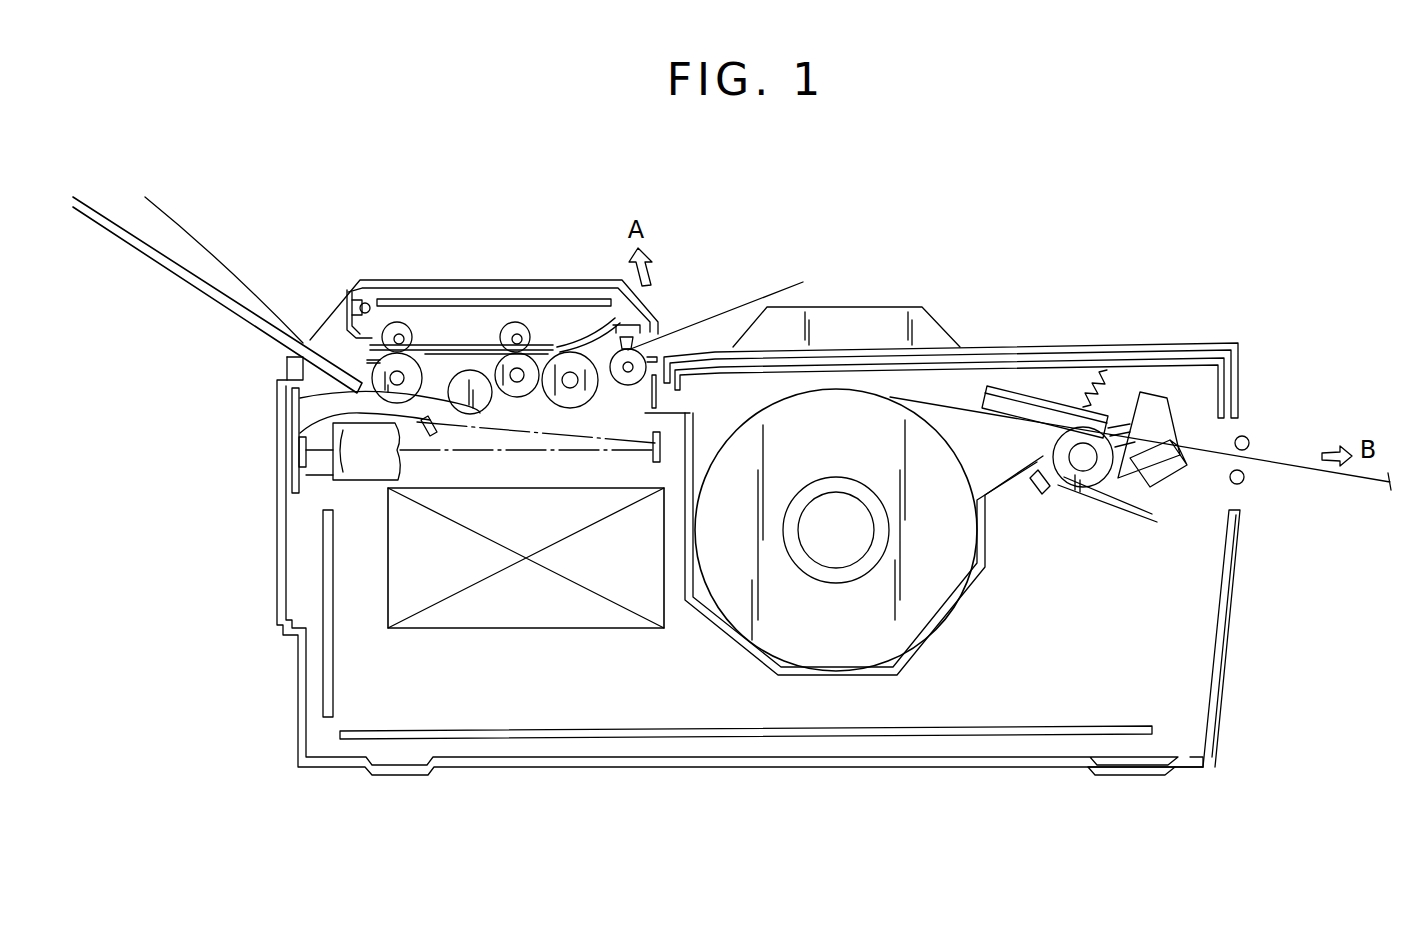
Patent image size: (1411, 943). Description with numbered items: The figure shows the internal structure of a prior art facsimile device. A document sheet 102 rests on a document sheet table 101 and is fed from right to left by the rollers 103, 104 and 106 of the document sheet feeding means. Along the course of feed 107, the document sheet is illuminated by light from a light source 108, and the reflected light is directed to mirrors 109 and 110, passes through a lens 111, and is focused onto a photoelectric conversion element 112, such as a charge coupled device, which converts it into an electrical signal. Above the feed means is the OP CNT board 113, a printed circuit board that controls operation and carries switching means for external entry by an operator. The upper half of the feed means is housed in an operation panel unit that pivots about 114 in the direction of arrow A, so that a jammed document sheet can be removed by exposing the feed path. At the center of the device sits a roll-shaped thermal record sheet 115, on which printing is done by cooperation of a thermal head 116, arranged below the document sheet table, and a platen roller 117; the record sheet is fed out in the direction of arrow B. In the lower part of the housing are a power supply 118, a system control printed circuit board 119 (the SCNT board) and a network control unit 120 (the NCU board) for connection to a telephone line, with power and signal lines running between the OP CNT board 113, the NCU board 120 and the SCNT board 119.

The document sheet table 101 is at (998, 347).
The document sheet 102 is at (757, 298).
The roller 103 is at (633, 358).
The roller 104 is at (577, 362).
The roller 106 is at (390, 360).
The course of feed 107 is at (458, 395).
The light source 108 is at (298, 398).
The mirror 109 is at (298, 418).
The mirror 110 is at (678, 443).
The lens 111 is at (358, 475).
The photoelectric conversion element 112 is at (300, 458).
The OP CNT board 113 is at (548, 298).
The pivot of operation panel unit 114 is at (358, 295).
The roll-shaped thermal record sheet 115 is at (868, 610).
The thermal head 116 is at (1050, 407).
The platen roller 117 is at (1077, 483).
The power supply 118 is at (433, 620).
The system control printed circuit board 119 is at (577, 737).
The network control unit 120 is at (327, 673).